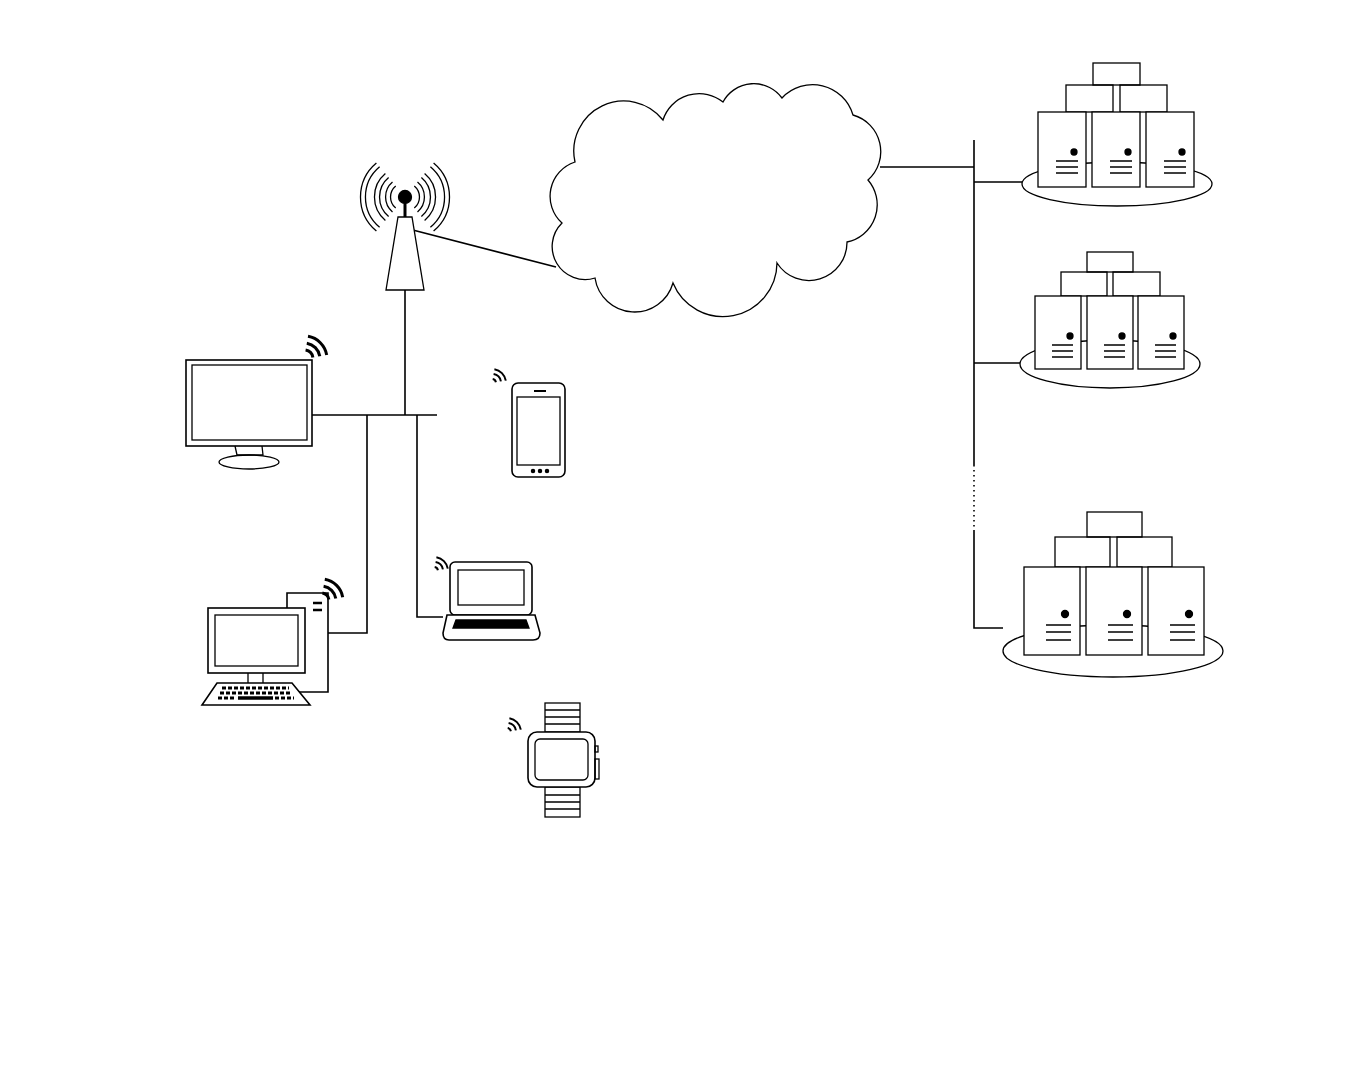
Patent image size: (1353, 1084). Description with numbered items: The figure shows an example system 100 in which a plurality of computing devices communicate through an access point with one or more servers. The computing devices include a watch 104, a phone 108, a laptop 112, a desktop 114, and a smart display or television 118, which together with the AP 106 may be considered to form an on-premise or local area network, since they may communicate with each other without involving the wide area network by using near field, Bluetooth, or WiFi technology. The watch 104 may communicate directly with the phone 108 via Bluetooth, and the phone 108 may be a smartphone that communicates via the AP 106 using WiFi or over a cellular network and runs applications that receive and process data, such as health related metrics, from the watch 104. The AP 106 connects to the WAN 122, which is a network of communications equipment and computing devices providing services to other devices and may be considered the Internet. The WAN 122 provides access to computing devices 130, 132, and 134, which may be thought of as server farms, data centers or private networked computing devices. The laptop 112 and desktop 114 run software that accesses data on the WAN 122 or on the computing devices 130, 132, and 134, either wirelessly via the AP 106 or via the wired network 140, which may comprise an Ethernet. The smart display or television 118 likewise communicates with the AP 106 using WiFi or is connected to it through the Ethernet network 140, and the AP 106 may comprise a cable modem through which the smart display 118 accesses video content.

The system 100 is at (210, 913).
The watch 104 is at (600, 752).
The AP 106 is at (390, 272).
The phone 108 is at (565, 391).
The laptop 112 is at (532, 568).
The desktop 114 is at (208, 608).
The smart display or television 118 is at (216, 361).
The WAN 122 is at (604, 112).
The computing device 130 is at (1192, 143).
The computing device 132 is at (1184, 329).
The computing device 134 is at (1204, 601).
The wired network 140 is at (355, 417).